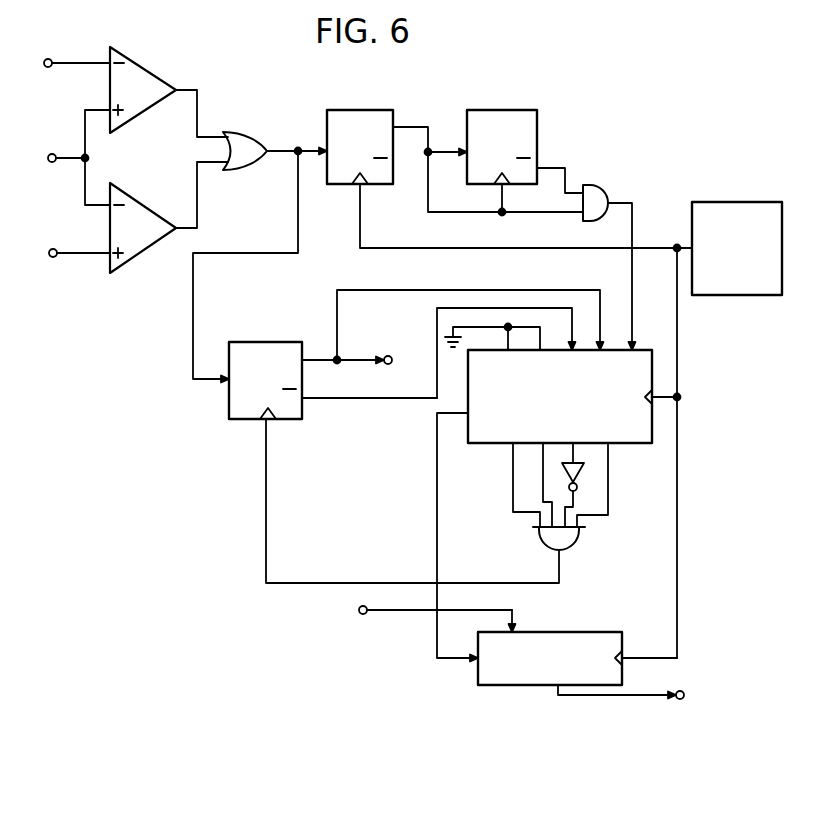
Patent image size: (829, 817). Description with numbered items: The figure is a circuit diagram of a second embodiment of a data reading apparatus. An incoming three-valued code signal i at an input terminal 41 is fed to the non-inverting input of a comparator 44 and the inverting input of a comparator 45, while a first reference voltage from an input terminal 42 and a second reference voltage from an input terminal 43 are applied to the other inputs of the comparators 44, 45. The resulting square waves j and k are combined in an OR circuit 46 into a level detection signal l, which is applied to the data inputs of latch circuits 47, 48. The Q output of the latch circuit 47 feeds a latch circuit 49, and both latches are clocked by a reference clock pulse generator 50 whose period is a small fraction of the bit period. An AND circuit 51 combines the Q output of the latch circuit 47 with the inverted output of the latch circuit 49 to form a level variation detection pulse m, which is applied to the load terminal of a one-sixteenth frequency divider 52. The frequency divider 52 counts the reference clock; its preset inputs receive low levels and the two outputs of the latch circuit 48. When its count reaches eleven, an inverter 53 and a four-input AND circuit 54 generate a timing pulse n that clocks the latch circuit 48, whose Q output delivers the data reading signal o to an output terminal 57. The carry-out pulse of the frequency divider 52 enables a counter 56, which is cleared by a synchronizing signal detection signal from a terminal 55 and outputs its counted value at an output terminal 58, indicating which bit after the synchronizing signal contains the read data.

The input terminal 41 is at (54, 153).
The input terminal 42 is at (49, 58).
The input terminal 43 is at (54, 248).
The comparator 44 is at (142, 58).
The comparator 45 is at (137, 258).
The OR circuit 46 is at (250, 130).
The latch circuit 47 is at (349, 109).
The latch circuit 48 is at (249, 341).
The latch circuit 49 is at (488, 109).
The reference clock pulse generator 50 is at (722, 201).
The AND circuit 51 is at (601, 183).
The 1/16-frequency divider 52 is at (490, 447).
The inverter 53 is at (582, 473).
The 4-input AND circuit 54 is at (575, 543).
The terminal 55 is at (364, 615).
The counter 56 is at (580, 631).
The output terminal 57 is at (392, 354).
The output terminal 58 is at (684, 691).